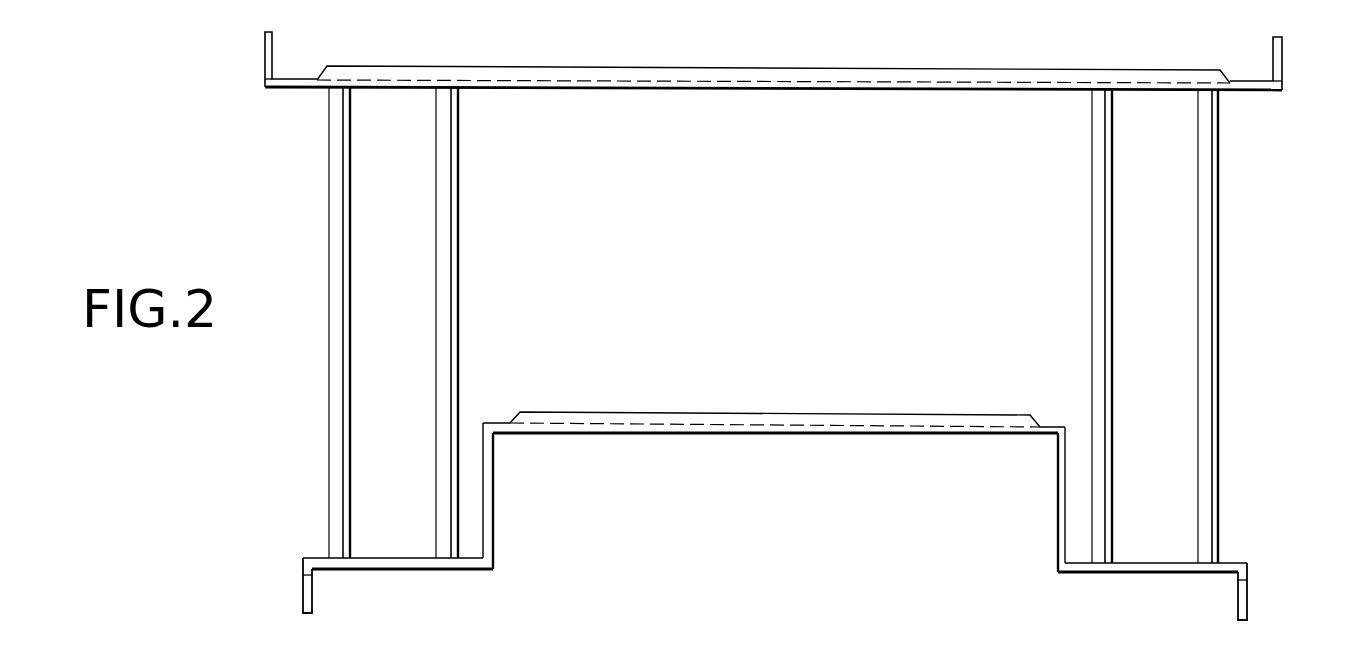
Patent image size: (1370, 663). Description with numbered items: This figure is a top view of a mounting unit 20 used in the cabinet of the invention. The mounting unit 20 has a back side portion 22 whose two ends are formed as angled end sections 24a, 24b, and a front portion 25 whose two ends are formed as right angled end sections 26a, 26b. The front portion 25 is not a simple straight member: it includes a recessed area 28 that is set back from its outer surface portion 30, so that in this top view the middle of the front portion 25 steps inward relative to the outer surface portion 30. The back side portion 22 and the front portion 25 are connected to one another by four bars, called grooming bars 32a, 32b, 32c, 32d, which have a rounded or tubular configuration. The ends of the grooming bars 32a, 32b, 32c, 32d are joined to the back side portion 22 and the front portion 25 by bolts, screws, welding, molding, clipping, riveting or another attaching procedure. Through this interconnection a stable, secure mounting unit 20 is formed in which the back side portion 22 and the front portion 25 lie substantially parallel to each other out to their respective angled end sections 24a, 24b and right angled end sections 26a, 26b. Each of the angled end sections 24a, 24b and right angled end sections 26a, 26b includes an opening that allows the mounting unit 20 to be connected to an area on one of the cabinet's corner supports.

The mounting unit 20 is at (1225, 312).
The back side portion 22 is at (815, 69).
The angled end section 24a is at (1283, 63).
The angled end section 24b is at (273, 56).
The front portion 25 is at (632, 513).
The right angled end section 26a is at (1247, 580).
The right angled end section 26b is at (303, 588).
The recessed area 28 is at (747, 401).
The outer surface portion 30 is at (463, 570).
The grooming bar 32a is at (350, 185).
The grooming bar 32b is at (458, 190).
The grooming bar 32c is at (1113, 193).
The grooming bar 32d is at (1220, 175).